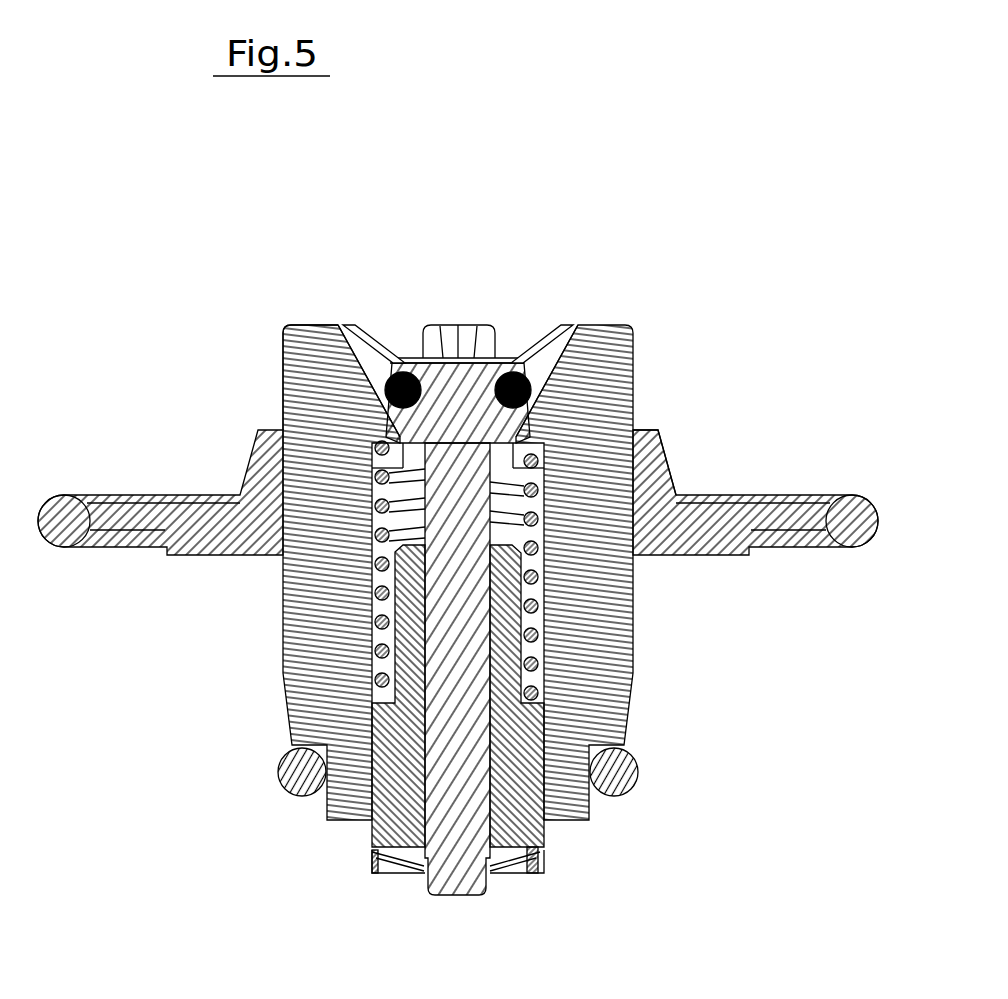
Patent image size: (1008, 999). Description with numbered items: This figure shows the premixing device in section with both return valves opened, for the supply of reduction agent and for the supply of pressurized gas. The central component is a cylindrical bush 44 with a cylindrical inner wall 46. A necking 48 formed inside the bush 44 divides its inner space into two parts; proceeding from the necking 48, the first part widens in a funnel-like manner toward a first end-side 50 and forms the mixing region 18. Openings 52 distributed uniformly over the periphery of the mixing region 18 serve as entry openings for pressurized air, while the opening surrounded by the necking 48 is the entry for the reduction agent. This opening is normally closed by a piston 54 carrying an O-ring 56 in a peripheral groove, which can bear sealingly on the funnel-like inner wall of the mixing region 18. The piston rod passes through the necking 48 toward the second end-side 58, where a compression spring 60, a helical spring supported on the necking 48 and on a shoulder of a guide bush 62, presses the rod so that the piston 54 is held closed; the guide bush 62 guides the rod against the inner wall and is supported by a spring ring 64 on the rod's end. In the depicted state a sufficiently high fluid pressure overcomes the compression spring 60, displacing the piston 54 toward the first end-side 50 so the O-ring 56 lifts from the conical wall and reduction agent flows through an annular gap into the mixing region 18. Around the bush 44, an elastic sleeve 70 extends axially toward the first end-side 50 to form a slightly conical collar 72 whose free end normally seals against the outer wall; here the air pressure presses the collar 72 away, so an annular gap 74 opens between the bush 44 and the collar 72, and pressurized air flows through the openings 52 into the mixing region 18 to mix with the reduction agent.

The mixing region 18 is at (463, 333).
The cylindrical bush 44 is at (610, 645).
The inner wall 46 is at (632, 605).
The necking 48 is at (560, 425).
The first end-side 50 is at (555, 322).
The openings 52 is at (405, 335).
The piston 54 is at (285, 358).
The O-ring 56 is at (283, 392).
The second end-side 58 is at (560, 822).
The compression spring 60 is at (372, 618).
The guide bush 62 is at (370, 830).
The spring ring 64 is at (538, 868).
The sleeve 70 is at (730, 518).
The collar 72 is at (675, 485).
The annular gap 74 is at (645, 432).